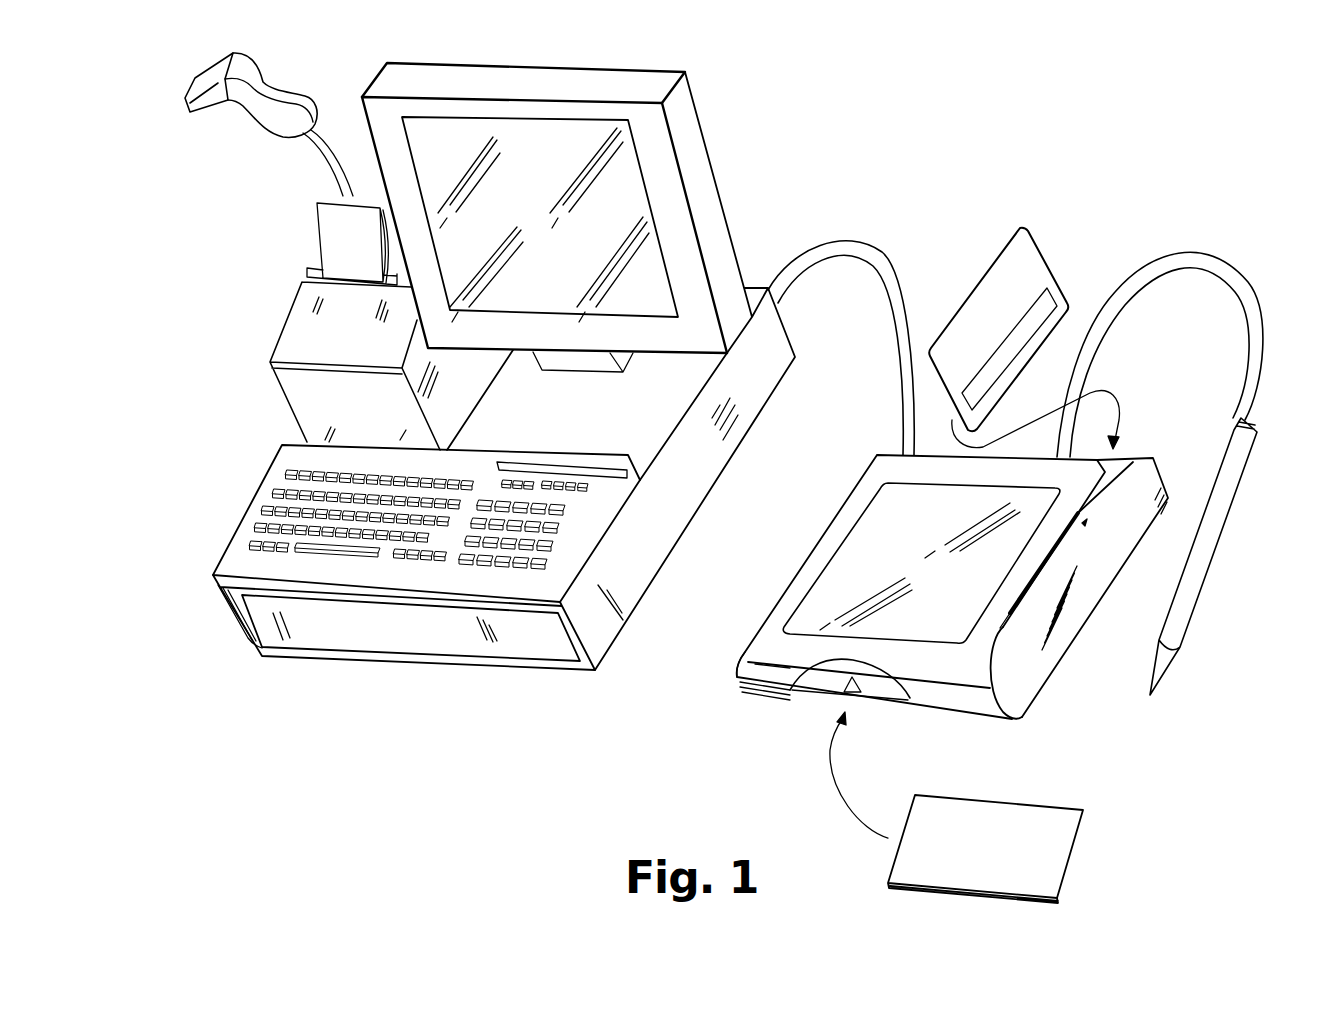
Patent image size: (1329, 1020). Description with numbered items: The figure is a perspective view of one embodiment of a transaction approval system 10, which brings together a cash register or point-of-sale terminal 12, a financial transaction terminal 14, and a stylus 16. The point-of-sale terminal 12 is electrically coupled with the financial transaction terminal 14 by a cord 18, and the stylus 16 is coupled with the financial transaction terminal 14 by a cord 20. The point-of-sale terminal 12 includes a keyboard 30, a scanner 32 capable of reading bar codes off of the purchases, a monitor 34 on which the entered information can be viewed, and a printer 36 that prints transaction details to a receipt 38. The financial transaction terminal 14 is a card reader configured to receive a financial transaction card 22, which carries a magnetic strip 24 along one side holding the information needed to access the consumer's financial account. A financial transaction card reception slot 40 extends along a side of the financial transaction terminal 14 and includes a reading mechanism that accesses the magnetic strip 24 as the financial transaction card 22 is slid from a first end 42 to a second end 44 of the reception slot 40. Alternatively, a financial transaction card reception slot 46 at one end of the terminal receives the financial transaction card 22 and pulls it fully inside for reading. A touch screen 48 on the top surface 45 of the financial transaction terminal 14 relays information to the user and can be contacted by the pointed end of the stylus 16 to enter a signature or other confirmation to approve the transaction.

The transaction approval system 10 is at (1032, 150).
The point-of-sale terminal 12 is at (748, 232).
The financial transaction terminal 14 is at (881, 440).
The stylus 16 is at (1237, 466).
The cord 18 is at (853, 240).
The cord 20 is at (1222, 258).
The financial transaction card 22 is at (1000, 275).
The magnetic strip 24 is at (1022, 340).
The keyboard 30 is at (262, 512).
The scanner 32 is at (183, 95).
The monitor 34 is at (618, 172).
The printer 36 is at (293, 323).
The receipt 38 is at (327, 238).
The financial transaction card reception slot 40 is at (1000, 627).
The first end 42 is at (1122, 488).
The second end 44 is at (985, 660).
The top surface 45 is at (768, 620).
The alternative financial transaction card reception slot 46 is at (817, 687).
The touch screen 48 is at (850, 553).